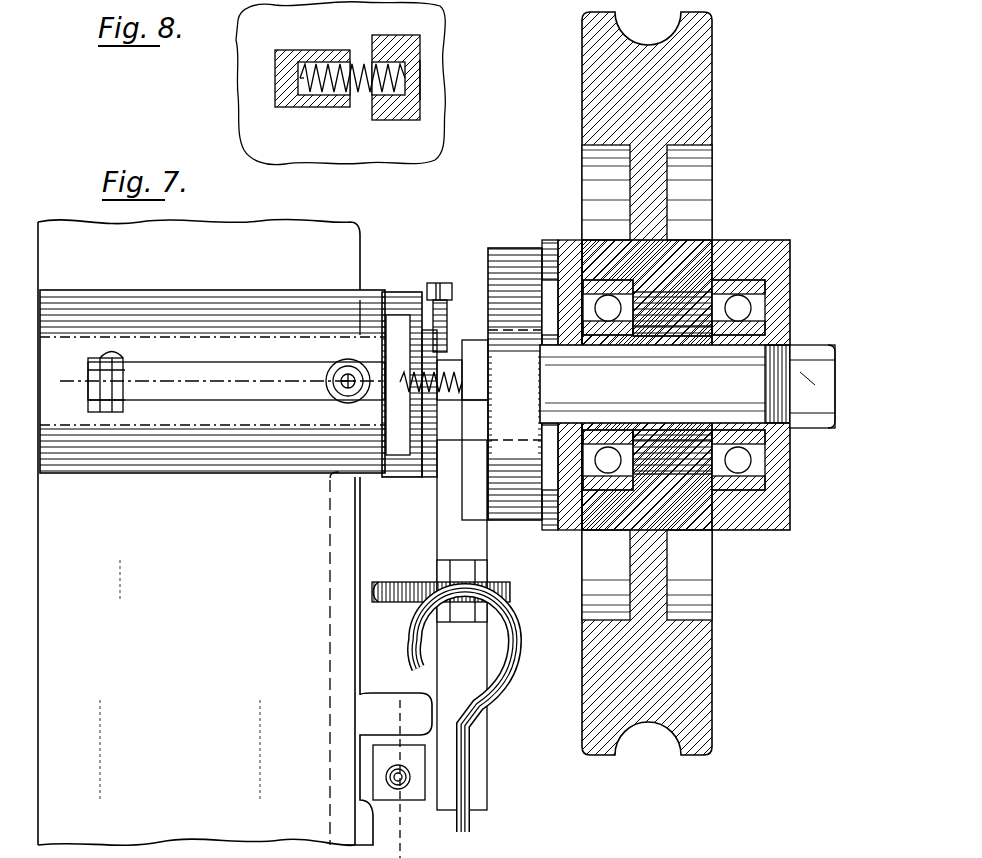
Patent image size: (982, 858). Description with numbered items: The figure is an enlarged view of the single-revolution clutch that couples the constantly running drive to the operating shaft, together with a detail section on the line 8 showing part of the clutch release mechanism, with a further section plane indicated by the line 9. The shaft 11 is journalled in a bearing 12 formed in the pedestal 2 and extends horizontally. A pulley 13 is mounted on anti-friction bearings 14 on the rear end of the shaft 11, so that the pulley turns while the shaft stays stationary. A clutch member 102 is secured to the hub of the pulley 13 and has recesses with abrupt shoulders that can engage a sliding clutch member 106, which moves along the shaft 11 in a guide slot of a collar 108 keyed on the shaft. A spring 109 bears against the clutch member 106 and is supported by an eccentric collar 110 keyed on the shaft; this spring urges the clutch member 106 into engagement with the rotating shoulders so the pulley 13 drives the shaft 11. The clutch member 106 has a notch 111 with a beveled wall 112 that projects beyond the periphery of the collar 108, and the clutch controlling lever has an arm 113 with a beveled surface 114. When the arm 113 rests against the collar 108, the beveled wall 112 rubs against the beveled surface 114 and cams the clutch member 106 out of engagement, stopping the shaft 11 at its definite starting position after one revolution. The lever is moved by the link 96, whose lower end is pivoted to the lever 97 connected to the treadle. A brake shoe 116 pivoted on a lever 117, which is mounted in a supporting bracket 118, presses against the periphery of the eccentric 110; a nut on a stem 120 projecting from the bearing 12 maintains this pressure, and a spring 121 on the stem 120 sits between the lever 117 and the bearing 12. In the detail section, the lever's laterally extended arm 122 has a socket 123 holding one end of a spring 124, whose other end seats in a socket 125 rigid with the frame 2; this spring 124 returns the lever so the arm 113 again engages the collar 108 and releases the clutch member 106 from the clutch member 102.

In FIG. 8, the pedestal 2 is at (410, 78).
In FIG. 7, the pedestal 2 is at (262, 240).
In FIG. 7, the section line 8— 8 is at (384, 718).
In FIG. 7, the section line 9— 9 is at (72, 393).
In FIG. 7, the shaft 11 is at (750, 365).
In FIG. 7, the bearing 12 is at (238, 302).
In FIG. 7, the pulley 13 is at (700, 98).
In FIG. 7, the anti-friction bearings 14 is at (738, 310).
In FIG. 7, the link 96 is at (470, 782).
In FIG. 7, the lever 97 is at (450, 510).
In FIG. 7, the clutch member 102 is at (580, 222).
In FIG. 7, the sliding clutch member 106 is at (445, 365).
In FIG. 7, the collar 108 is at (468, 310).
In FIG. 7, the spring 109 is at (428, 362).
In FIG. 7, the eccentric collar 110 is at (397, 300).
In FIG. 7, the notch 111 is at (470, 360).
In FIG. 7, the beveled wall 112 is at (440, 392).
In FIG. 7, the arm 113 is at (477, 450).
In FIG. 7, the beveled surface 114 is at (470, 370).
In FIG. 7, the brake shoe 116 is at (372, 323).
In FIG. 7, the lever 117 is at (262, 395).
In FIG. 7, the supporting bracket 118 is at (92, 395).
In FIG. 7, the stem 120 is at (350, 345).
In FIG. 7, the spring 121 is at (346, 403).
In FIG. 8, the laterally extended arm 122 is at (290, 107).
In FIG. 7, the laterally extended arm 122 is at (378, 782).
In FIG. 8, the socket 123 is at (330, 107).
In FIG. 7, the socket 123 is at (400, 790).
In FIG. 8, the spring 124 is at (355, 62).
In FIG. 7, the spring 124 is at (372, 762).
In FIG. 8, the socket 125 is at (400, 120).